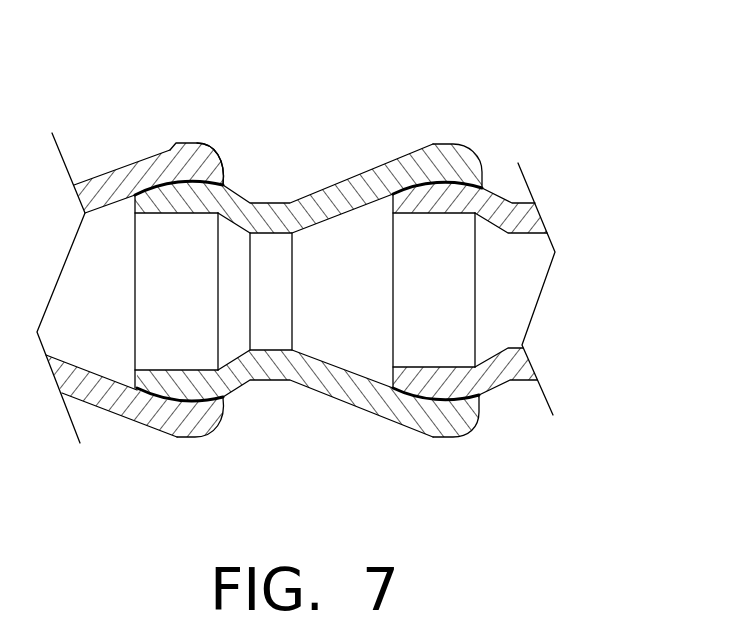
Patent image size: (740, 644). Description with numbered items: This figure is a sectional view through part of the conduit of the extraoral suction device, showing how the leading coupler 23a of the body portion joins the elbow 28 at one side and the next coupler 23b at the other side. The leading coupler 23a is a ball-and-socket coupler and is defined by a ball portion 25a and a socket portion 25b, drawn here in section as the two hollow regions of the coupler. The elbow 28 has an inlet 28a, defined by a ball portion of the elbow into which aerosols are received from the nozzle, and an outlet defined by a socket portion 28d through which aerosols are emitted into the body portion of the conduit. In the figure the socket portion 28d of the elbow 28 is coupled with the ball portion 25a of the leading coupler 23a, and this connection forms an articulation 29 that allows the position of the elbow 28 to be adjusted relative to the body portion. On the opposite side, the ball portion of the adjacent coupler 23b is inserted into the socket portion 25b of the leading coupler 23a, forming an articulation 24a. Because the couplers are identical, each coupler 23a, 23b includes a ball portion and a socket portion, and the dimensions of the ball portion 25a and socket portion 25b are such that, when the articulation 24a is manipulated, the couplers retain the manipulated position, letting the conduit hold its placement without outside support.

The elbow 28 is at (91, 170).
The inlet 28a is at (178, 181).
The socket portion 28d is at (210, 163).
The articulation 29 is at (227, 183).
The leading coupler 23a is at (338, 181).
The articulation 24a is at (488, 184).
The coupler 23b is at (530, 214).
The ball portion 25a is at (252, 452).
The socket portion 25b is at (478, 452).